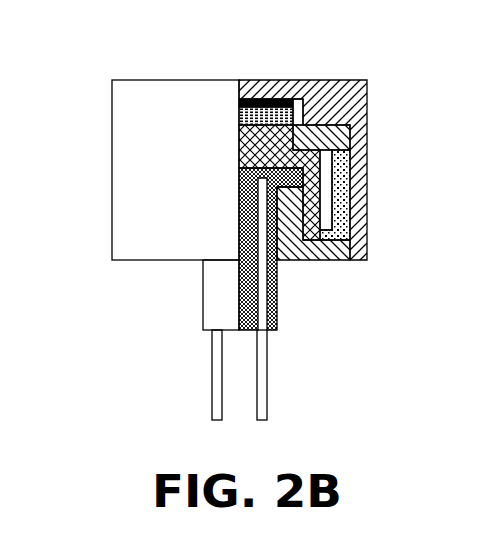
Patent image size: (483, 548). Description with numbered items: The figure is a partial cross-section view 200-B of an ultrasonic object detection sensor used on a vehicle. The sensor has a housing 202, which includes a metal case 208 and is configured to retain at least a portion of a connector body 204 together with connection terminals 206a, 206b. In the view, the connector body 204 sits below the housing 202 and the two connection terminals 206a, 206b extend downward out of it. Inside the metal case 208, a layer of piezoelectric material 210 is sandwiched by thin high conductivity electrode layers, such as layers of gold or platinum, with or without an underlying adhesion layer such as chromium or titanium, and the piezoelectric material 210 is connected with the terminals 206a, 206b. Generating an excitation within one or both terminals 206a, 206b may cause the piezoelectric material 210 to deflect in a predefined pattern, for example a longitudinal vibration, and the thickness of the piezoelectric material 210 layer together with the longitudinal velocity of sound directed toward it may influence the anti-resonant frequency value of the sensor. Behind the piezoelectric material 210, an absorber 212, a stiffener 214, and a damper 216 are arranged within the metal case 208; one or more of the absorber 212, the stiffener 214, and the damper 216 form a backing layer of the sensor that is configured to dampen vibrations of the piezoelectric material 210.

The partial cross-section view 200-B is at (77, 77).
The housing 202 is at (112, 180).
The connector body 204 is at (203, 308).
The connection terminal 206a is at (212, 384).
The connection terminal 206b is at (267, 365).
The metal case 208 is at (340, 100).
The piezoelectric material 210 is at (262, 100).
The absorber 212 is at (239, 116).
The stiffener 214 is at (338, 138).
The damper 216 is at (320, 181).